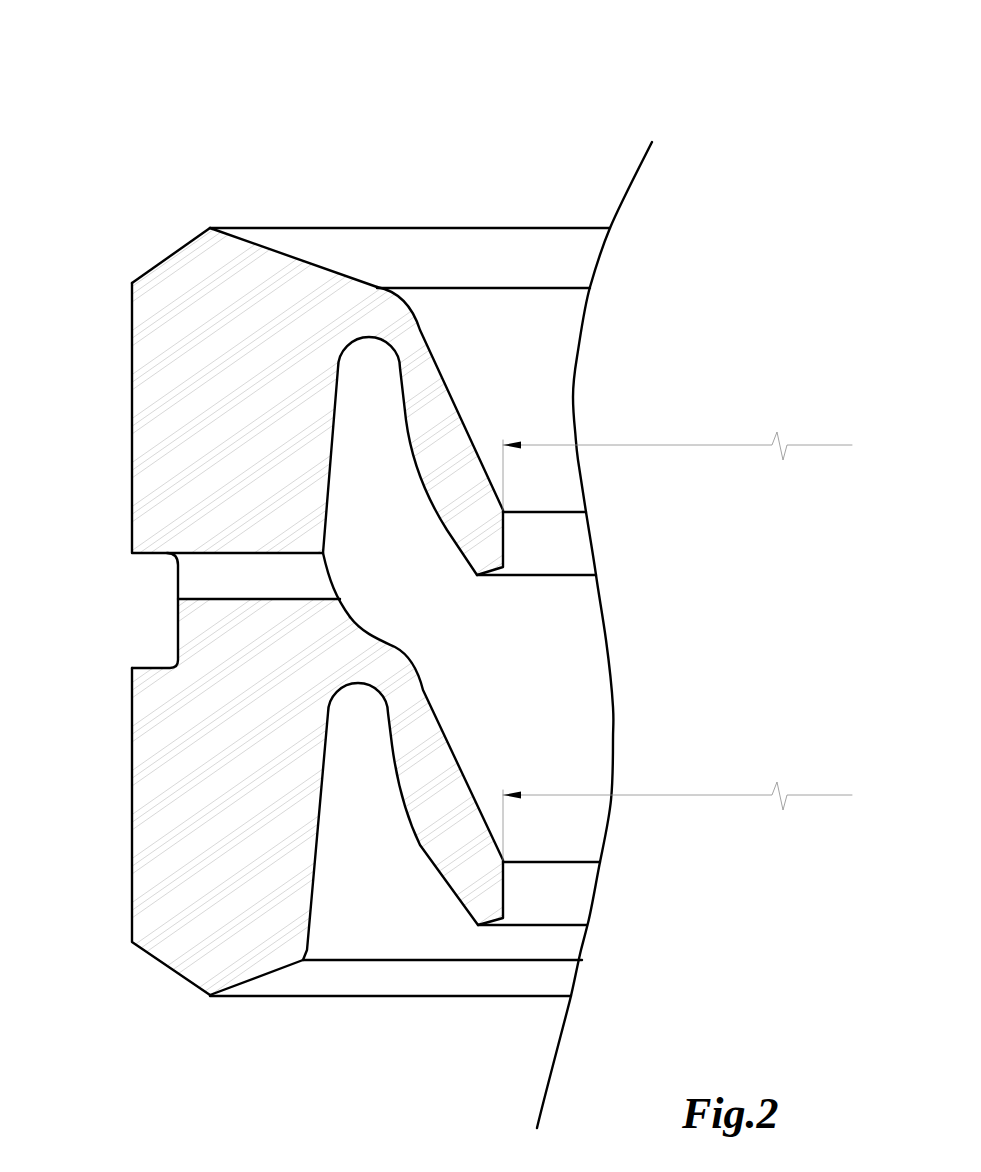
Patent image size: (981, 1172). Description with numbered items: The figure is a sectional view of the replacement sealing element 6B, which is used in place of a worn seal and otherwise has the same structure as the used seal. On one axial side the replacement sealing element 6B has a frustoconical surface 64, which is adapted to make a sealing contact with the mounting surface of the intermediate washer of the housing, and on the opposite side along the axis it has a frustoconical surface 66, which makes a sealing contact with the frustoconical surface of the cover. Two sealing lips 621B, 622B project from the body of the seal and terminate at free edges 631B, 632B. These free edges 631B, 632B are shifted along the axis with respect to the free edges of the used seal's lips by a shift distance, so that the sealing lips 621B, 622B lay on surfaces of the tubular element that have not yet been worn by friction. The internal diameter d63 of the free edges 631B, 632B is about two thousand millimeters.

The replacement sealing element 6B is at (291, 586).
The frustoconical surface 64 is at (284, 246).
The frustoconical surface 66 is at (261, 992).
The sealing lip 621B is at (472, 536).
The sealing lip 622B is at (448, 857).
The free edge 631B is at (562, 577).
The free edge 632B is at (563, 926).
The internal diameter of free edges d63 is at (677, 639).